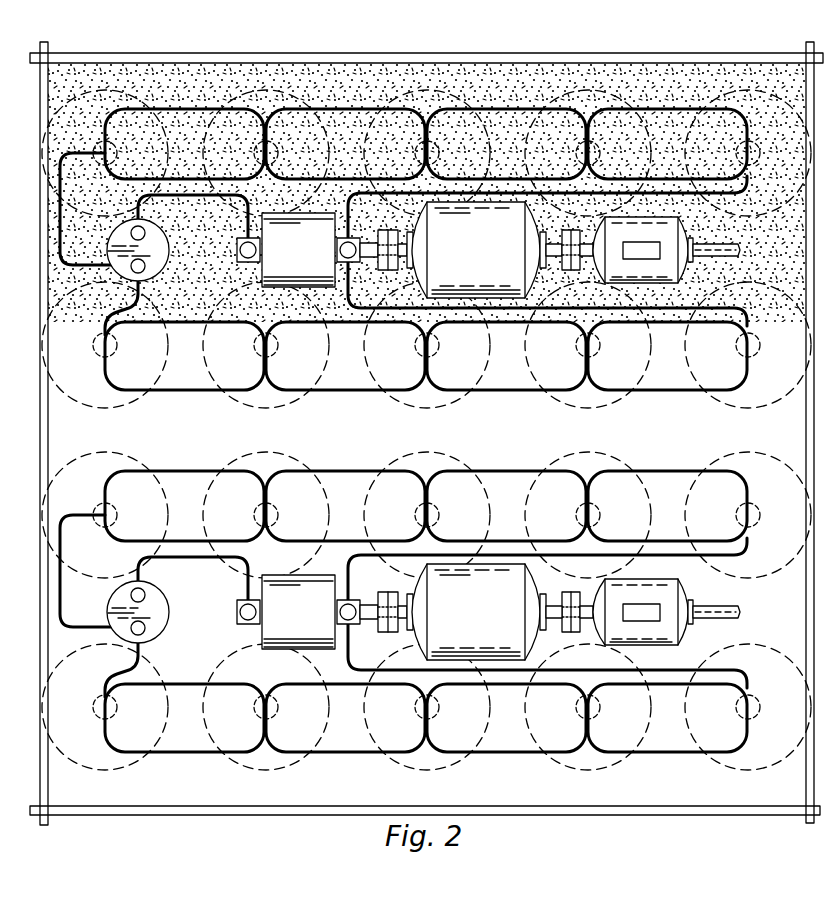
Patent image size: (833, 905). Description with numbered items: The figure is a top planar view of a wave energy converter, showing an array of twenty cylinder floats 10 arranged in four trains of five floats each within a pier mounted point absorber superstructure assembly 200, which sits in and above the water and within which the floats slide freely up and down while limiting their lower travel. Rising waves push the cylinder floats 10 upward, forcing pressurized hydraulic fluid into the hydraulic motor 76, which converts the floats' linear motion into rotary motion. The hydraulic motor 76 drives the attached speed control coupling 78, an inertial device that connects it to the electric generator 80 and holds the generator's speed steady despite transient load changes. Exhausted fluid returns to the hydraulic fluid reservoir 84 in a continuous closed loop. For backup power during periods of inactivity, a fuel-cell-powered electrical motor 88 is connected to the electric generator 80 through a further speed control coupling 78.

The cylinder float 10 is at (747, 760).
The pier mounted point absorber superstructure assembly 200 is at (170, 815).
The hydraulic motor 76 is at (309, 614).
The speed control coupling 78 is at (391, 633).
The electric generator 80 is at (479, 621).
The hydraulic fluid reservoir 84 is at (169, 610).
The electrical motor 88 is at (673, 625).